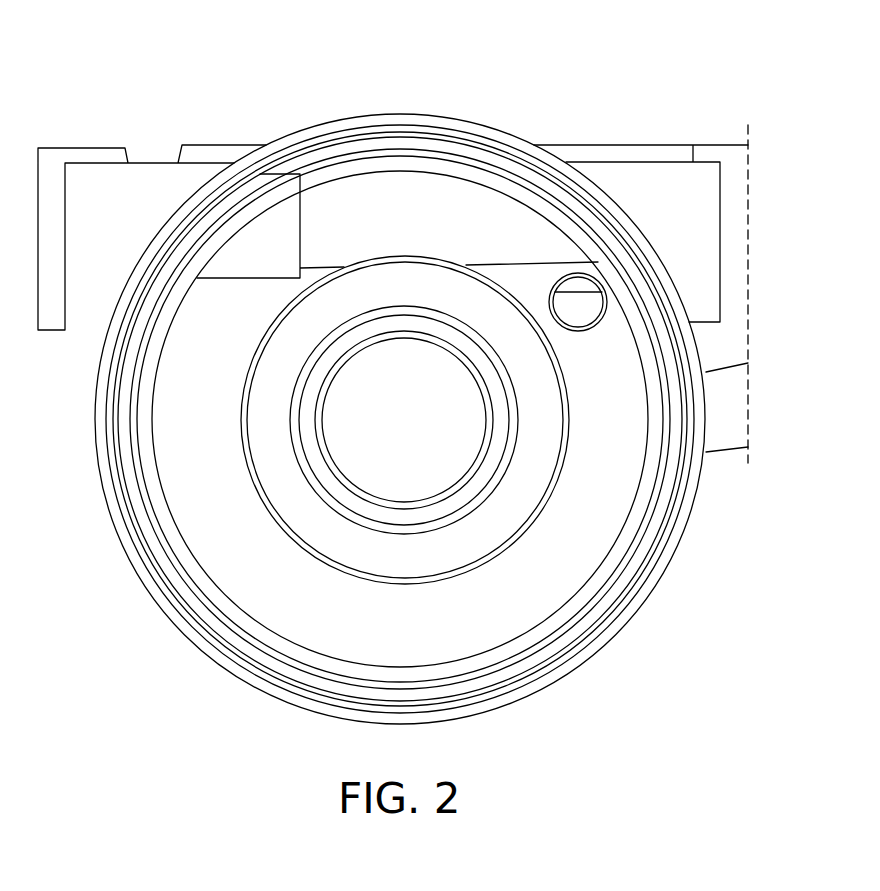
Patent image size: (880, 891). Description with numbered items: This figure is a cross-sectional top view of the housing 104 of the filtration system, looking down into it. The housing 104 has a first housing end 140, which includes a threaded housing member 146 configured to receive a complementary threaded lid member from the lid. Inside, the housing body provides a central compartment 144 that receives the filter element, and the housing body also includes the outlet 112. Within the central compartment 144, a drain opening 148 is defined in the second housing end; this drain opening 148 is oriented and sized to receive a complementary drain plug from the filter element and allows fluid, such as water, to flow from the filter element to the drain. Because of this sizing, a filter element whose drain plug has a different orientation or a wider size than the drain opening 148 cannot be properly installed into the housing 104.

The housing 104 is at (80, 105).
The first housing end 140 is at (266, 692).
The threaded housing member 146 is at (143, 504).
The central compartment 144 is at (552, 577).
The outlet 112 is at (413, 412).
The drain opening 148 is at (580, 308).